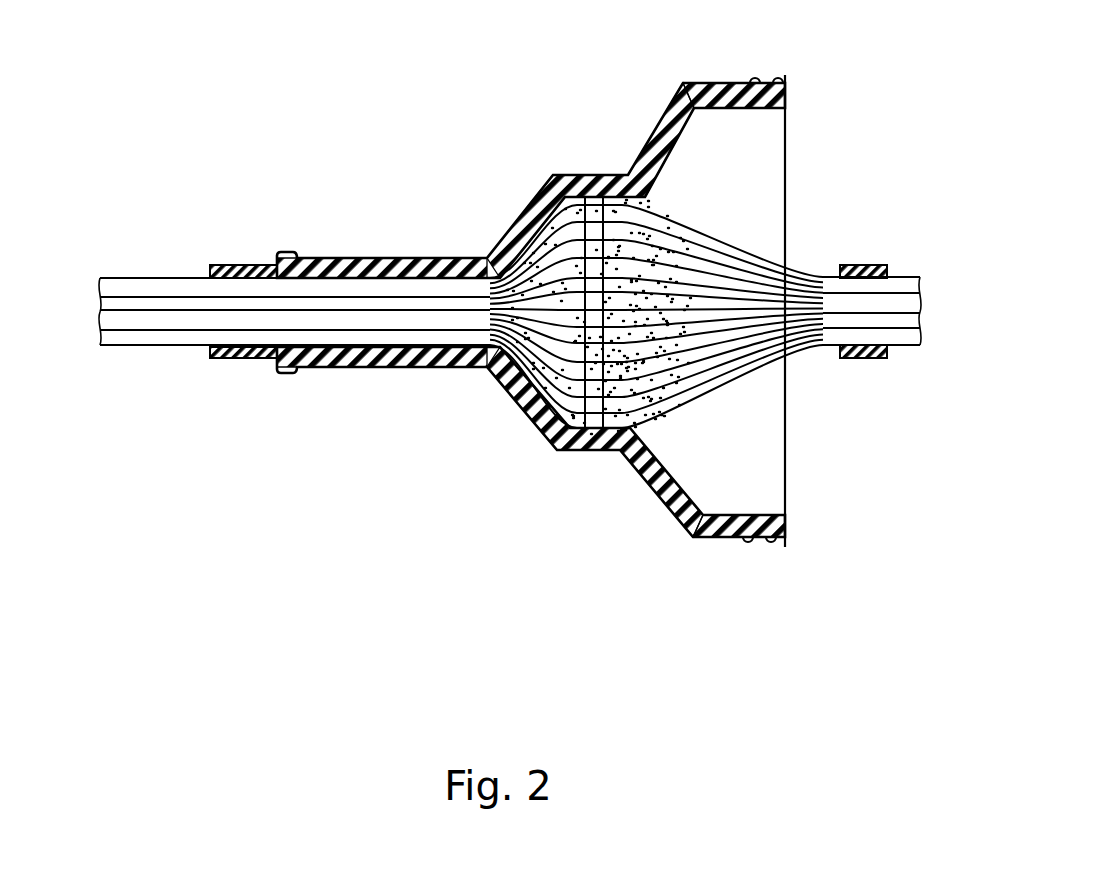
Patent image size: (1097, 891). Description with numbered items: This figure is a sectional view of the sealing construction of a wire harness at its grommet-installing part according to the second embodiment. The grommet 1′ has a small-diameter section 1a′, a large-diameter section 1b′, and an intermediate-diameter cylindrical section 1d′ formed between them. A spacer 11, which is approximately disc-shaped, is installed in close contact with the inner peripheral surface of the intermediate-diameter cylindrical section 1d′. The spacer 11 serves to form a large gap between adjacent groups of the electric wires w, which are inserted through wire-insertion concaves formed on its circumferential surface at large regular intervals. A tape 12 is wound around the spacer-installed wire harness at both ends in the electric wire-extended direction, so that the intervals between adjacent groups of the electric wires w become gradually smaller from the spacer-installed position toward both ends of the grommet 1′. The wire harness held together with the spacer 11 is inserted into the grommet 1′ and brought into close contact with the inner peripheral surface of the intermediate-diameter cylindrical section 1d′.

The grommet 1′ is at (847, 75).
The small-diameter section 1a′ is at (330, 363).
The intermediate-diameter cylindrical section 1d′ is at (523, 395).
The large-diameter section 1b′ is at (665, 505).
The spacer 11 is at (595, 397).
The tape 12 is at (233, 265).
The electric wires w is at (140, 338).